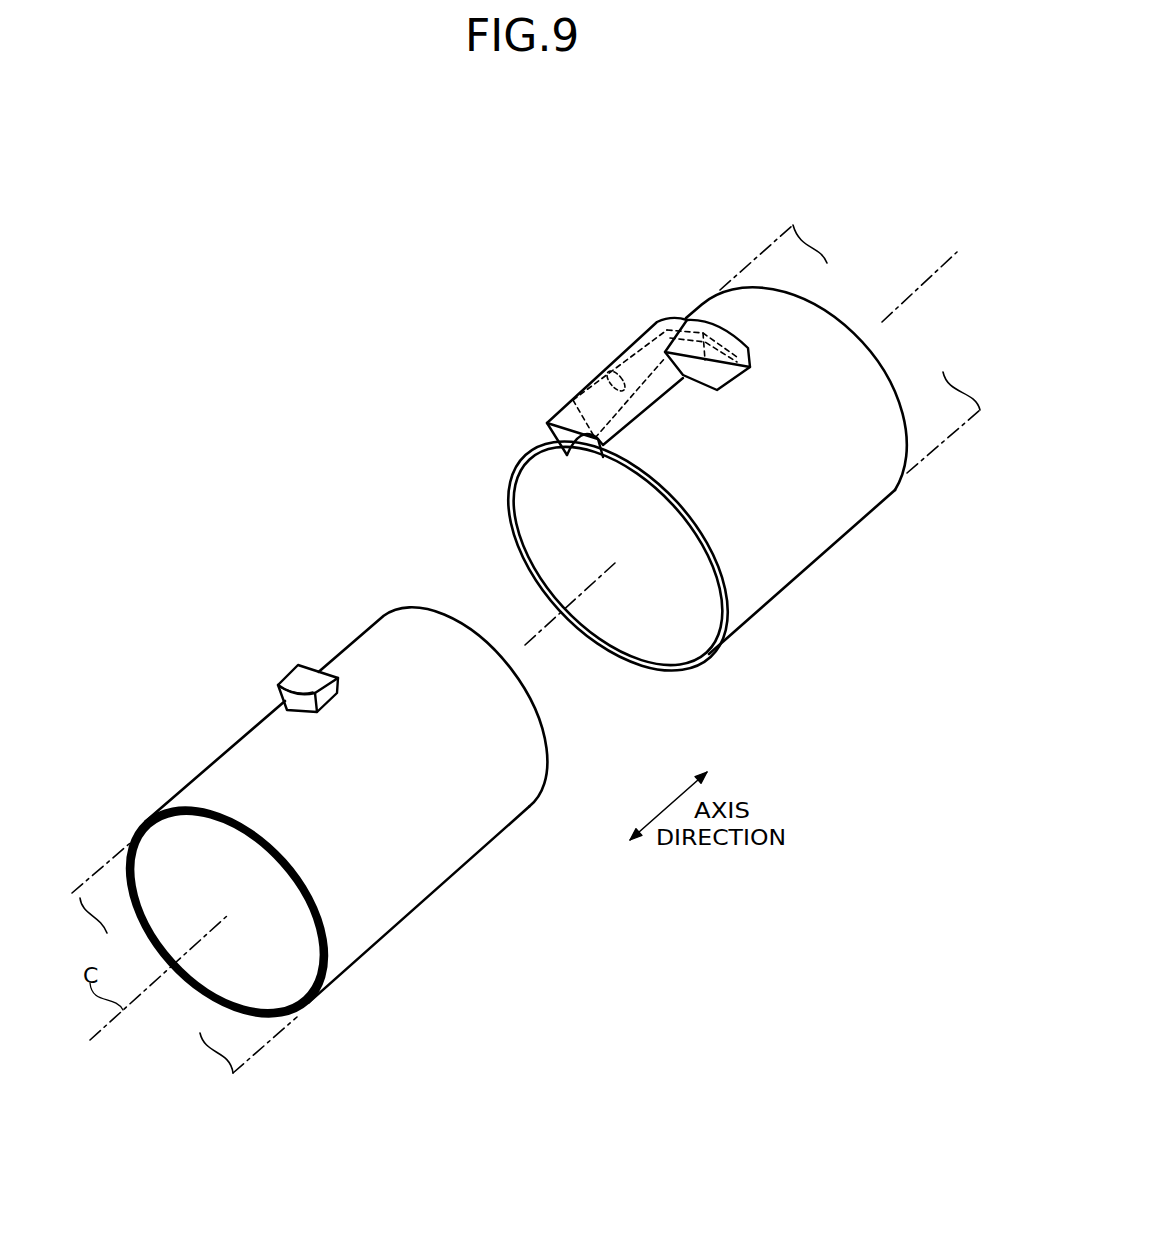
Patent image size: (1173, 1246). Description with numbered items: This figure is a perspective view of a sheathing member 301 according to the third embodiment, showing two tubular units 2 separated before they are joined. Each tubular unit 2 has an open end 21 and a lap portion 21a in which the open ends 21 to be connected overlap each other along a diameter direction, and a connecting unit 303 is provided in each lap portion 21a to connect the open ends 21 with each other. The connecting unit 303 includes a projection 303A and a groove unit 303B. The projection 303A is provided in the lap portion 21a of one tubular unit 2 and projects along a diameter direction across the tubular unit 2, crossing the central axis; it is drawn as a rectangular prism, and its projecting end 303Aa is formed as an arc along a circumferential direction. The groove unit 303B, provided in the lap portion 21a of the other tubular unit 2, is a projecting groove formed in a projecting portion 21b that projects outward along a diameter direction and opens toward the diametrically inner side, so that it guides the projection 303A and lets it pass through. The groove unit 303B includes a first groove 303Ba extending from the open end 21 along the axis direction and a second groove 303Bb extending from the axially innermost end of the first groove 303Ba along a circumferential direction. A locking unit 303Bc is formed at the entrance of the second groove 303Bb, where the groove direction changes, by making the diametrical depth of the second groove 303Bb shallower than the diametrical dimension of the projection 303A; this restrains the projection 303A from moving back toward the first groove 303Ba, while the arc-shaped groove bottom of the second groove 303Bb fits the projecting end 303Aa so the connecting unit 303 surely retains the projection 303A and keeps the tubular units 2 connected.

The tubular unit 2 is at (865, 485).
The open end 21 is at (757, 593).
The lap portion 21a is at (790, 550).
The projecting portion 21b is at (547, 423).
The sheathing member 301 is at (741, 160).
The connecting unit 303 is at (512, 450).
The projection 303A is at (284, 632).
The projecting end 303Aa is at (310, 670).
The groove unit 303B is at (647, 317).
The first groove 303Ba is at (613, 368).
The second groove 303Bb is at (742, 340).
The locking unit 303Bc is at (668, 325).